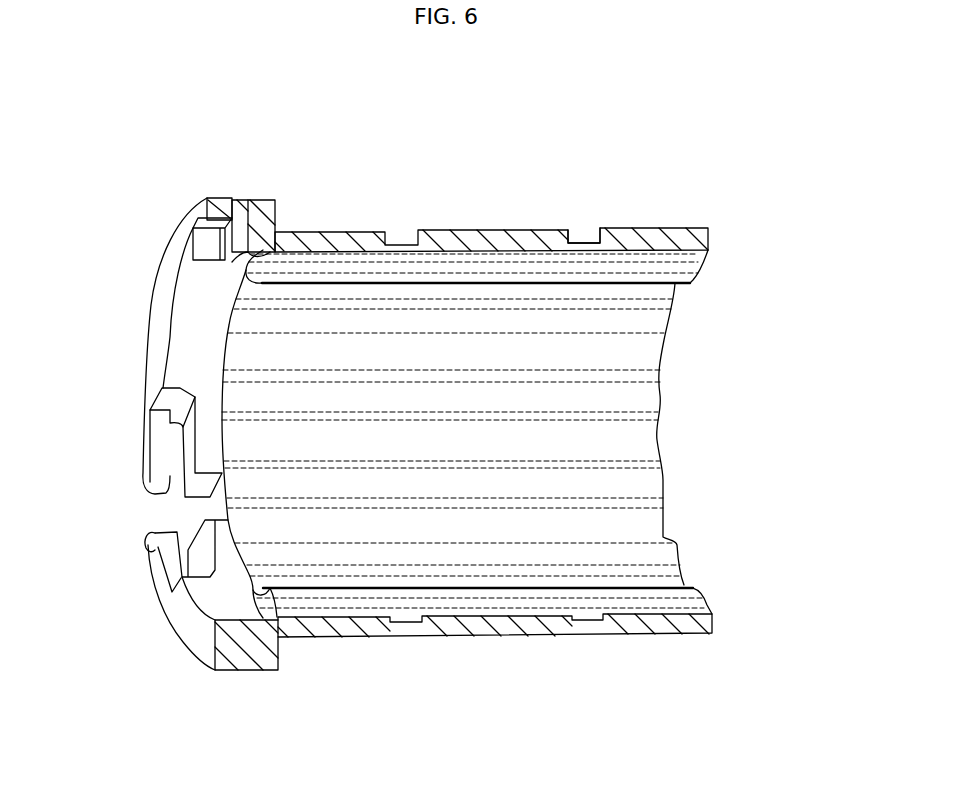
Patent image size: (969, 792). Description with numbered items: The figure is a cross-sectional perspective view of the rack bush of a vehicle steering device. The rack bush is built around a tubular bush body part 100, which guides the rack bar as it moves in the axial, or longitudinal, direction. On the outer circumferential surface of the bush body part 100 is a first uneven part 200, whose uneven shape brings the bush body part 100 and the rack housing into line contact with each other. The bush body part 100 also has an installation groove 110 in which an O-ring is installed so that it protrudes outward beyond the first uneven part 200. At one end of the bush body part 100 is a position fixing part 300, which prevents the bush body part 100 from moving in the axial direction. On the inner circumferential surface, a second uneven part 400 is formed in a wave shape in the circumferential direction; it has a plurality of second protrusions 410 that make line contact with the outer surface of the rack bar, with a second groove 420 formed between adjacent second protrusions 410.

The bush body part 100 is at (324, 233).
The installation groove 110 is at (590, 234).
The first uneven part 200 is at (492, 229).
The position fixing part 300 is at (168, 245).
The second uneven part 400 is at (539, 431).
The second protrusions 410 is at (652, 382).
The second groove 420 is at (654, 432).